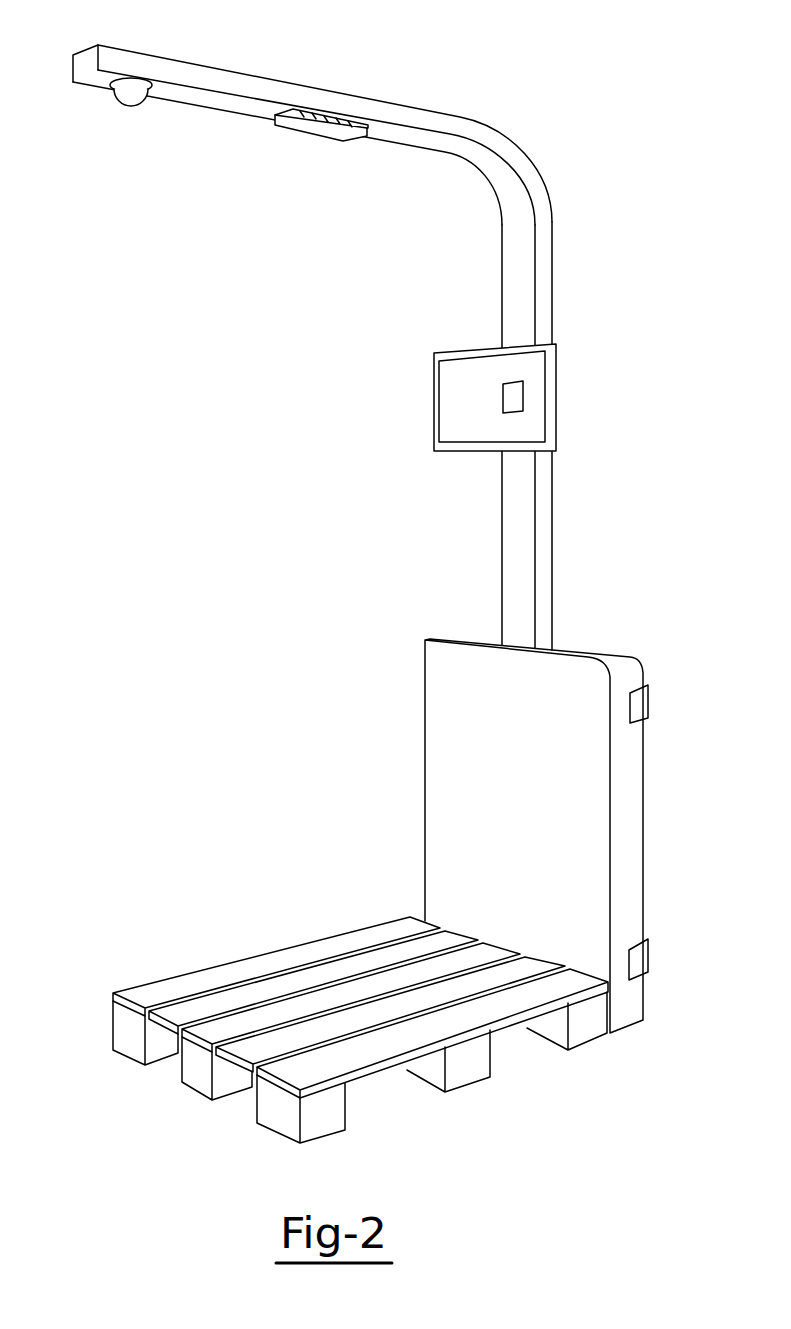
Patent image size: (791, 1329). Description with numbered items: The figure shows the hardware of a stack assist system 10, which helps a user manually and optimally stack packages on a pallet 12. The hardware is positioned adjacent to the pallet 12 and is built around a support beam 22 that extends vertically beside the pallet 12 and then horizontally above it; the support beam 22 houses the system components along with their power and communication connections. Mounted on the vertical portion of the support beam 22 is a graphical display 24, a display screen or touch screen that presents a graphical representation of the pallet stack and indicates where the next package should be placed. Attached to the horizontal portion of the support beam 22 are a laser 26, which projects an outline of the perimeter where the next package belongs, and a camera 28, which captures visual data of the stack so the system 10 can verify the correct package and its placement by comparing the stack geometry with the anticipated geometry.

The stack assist system 10 is at (376, 74).
The pallet 12 is at (467, 1060).
The support beam 22 is at (543, 558).
The graphical display 24 is at (467, 406).
The laser 26 is at (310, 127).
The camera 28 is at (128, 97).